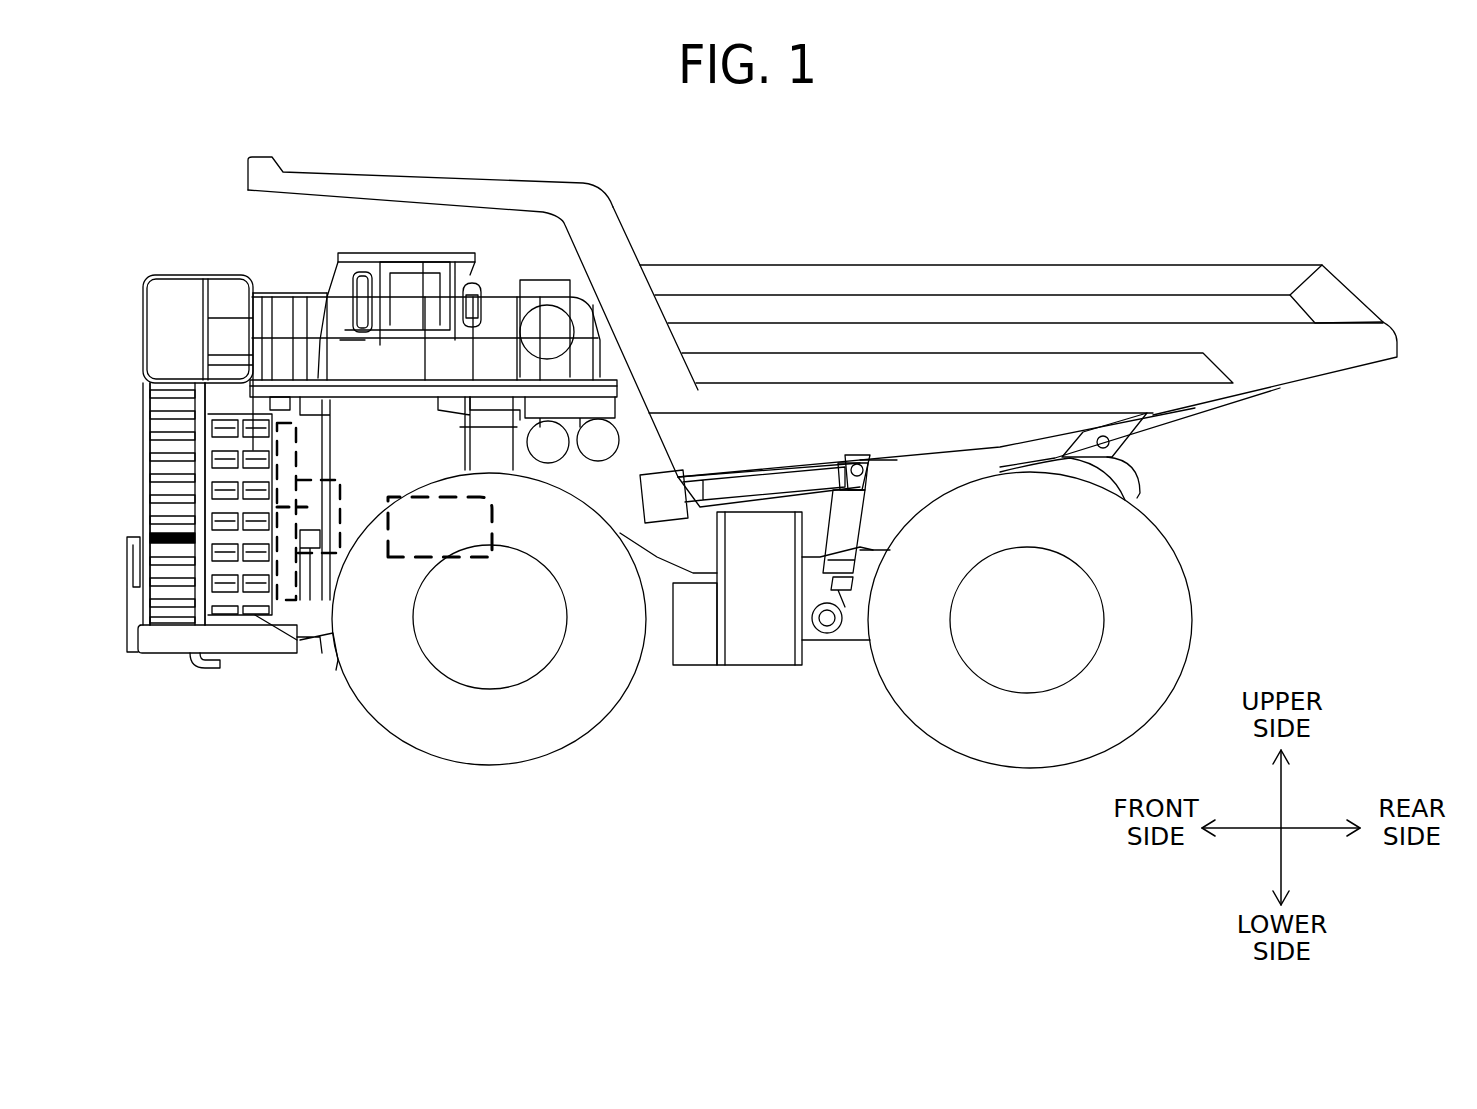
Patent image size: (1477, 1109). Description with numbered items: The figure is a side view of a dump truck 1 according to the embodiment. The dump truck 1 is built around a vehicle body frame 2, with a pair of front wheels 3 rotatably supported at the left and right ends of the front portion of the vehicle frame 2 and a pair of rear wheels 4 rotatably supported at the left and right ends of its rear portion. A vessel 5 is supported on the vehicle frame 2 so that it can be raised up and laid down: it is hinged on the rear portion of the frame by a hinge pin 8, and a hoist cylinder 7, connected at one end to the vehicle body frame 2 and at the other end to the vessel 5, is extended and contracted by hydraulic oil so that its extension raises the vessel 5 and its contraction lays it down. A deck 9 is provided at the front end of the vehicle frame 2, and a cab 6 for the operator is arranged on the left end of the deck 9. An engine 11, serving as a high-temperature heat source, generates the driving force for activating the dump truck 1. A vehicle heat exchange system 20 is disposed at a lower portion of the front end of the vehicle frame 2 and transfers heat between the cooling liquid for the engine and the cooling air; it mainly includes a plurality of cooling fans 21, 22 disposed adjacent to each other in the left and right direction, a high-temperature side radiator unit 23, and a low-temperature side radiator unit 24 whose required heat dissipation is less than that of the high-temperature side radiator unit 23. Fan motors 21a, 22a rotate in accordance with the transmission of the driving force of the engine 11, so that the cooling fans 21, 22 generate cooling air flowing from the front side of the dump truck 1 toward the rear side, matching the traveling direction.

The dump truck 1 is at (1246, 170).
The vehicle body frame 2 is at (653, 557).
The front wheels 3 is at (478, 767).
The rear wheels 4 is at (1077, 762).
The vessel 5 is at (559, 182).
The cab 6 is at (355, 255).
The hoist cylinder 7 is at (849, 540).
The hinge pin 8 is at (1113, 438).
The deck 9 is at (472, 298).
The engine 11 is at (463, 560).
The vehicle heat exchange system 20 is at (398, 860).
The cooling fan 21 is at (250, 640).
The cooling fan 22 is at (242, 644).
The fan motor 21a is at (310, 640).
The fan motor 22a is at (344, 660).
The high-temperature side radiator unit 23 is at (220, 640).
The low-temperature side radiator unit 24 is at (182, 640).